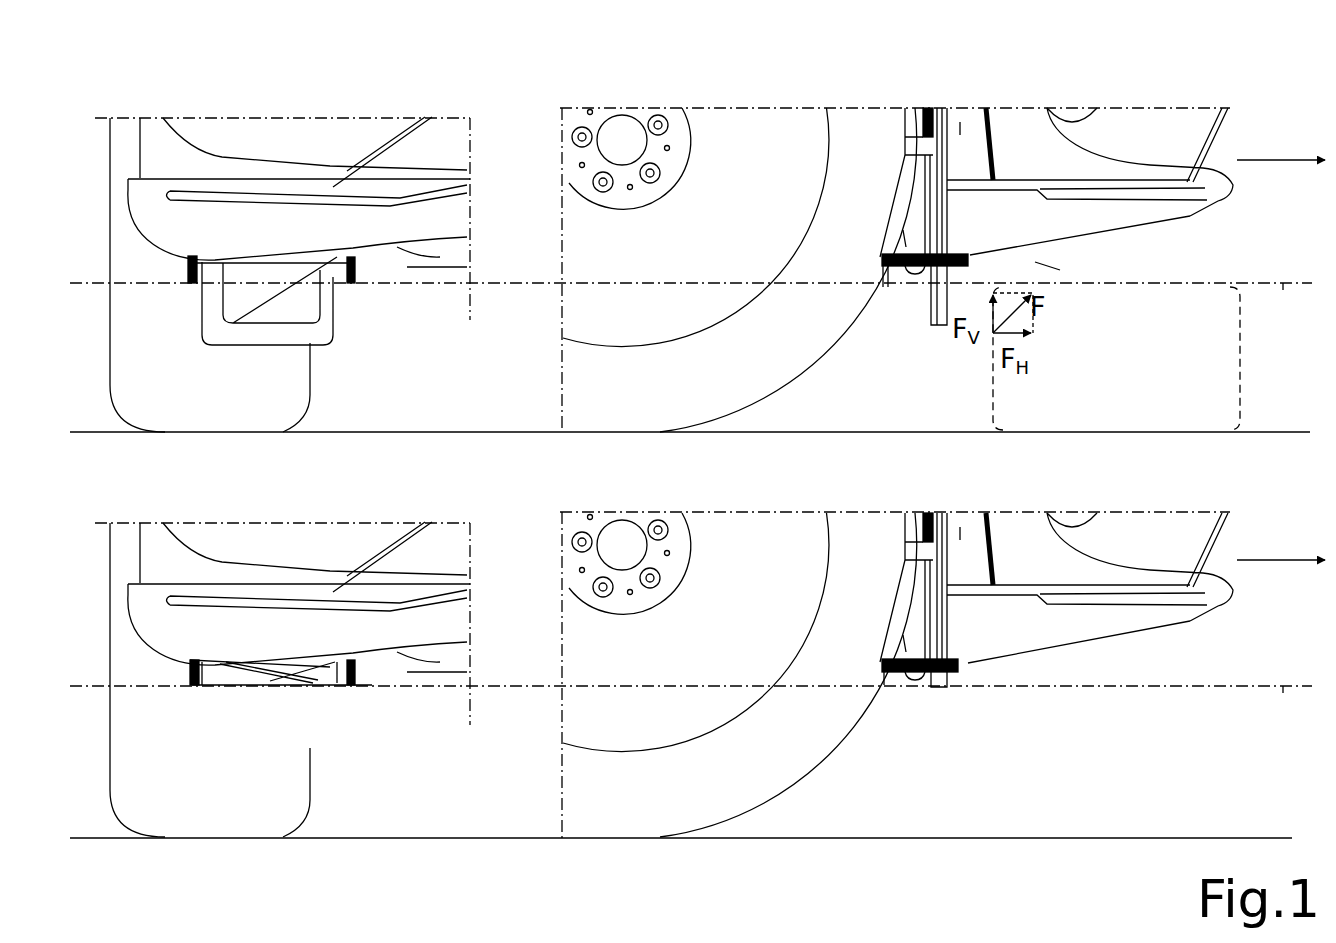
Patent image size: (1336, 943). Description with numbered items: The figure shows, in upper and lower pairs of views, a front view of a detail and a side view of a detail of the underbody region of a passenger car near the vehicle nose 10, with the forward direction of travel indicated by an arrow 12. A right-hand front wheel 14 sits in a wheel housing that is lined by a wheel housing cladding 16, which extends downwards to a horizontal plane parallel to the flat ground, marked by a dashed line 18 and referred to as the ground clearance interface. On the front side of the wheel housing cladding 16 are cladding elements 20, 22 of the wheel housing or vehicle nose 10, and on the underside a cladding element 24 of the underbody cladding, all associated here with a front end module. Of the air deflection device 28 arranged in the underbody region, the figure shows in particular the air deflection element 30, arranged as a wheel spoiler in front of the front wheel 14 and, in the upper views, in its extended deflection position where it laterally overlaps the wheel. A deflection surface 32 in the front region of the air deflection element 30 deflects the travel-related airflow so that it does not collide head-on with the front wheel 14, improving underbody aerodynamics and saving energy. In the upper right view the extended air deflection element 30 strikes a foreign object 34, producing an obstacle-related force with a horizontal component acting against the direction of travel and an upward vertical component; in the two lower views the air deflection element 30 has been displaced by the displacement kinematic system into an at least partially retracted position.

The vehicle nose 10 is at (1236, 145).
The arrow 12 is at (1283, 165).
The front wheel 14 is at (300, 375).
The wheel housing cladding 16 is at (896, 270).
The dashed line 18 is at (1283, 288).
The cladding element 20 is at (960, 128).
The cladding element 22 is at (443, 148).
The cladding element 24 is at (440, 215).
The air deflection device 28 is at (1047, 273).
The air deflection element 30 is at (357, 338).
The deflection surface 32 is at (300, 297).
The foreign object 34 is at (1182, 395).